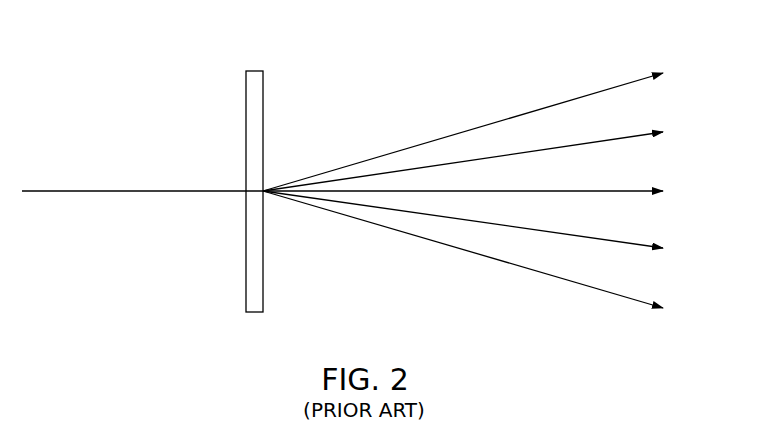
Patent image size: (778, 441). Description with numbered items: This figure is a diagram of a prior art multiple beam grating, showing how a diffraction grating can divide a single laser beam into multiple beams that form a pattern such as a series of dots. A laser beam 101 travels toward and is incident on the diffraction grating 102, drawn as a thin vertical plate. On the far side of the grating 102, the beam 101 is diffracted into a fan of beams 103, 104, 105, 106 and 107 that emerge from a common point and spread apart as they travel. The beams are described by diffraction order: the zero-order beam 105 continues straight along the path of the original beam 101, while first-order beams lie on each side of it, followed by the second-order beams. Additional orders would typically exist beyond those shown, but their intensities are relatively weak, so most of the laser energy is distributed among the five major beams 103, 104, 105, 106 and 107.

The laser beam 101 is at (107, 190).
The diffraction grating 102 is at (252, 70).
The diffracted beam 103 is at (632, 81).
The diffracted beam 104 is at (632, 138).
The zero-order beam 105 is at (632, 190).
The diffracted beam 106 is at (630, 244).
The diffracted beam 107 is at (628, 300).